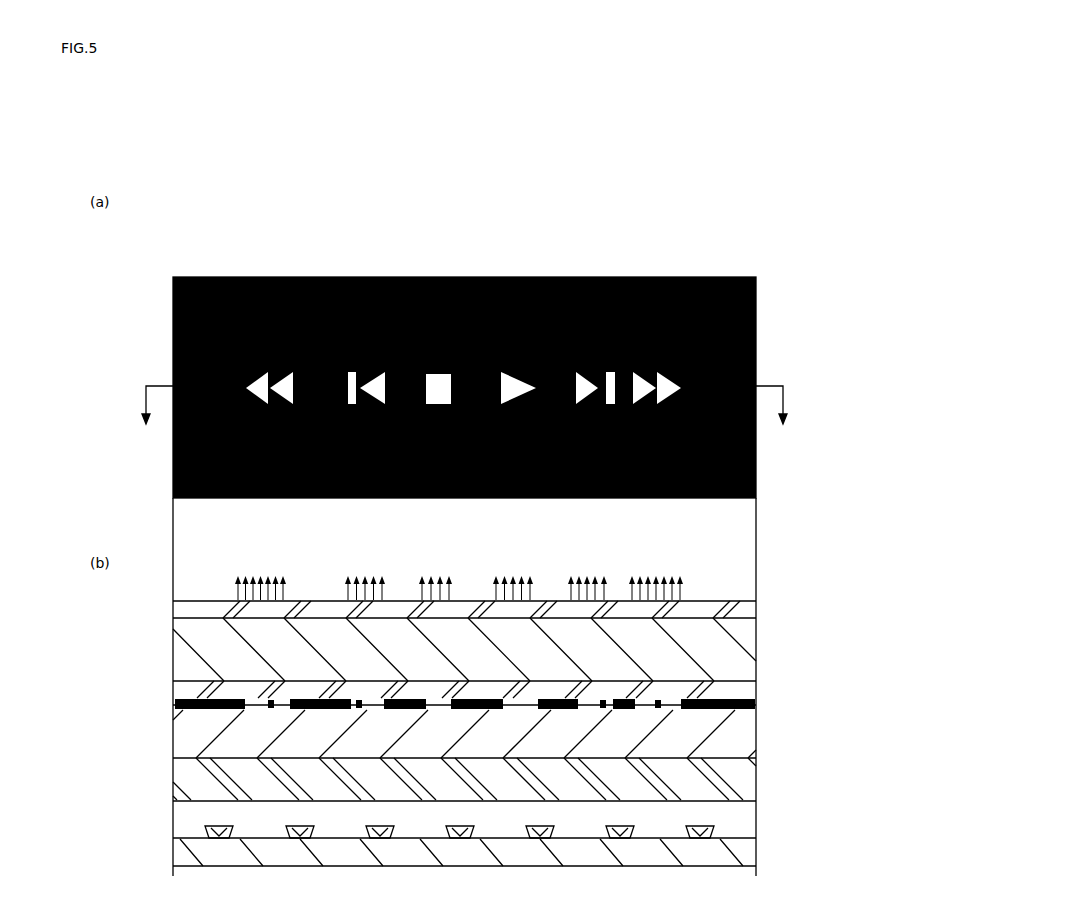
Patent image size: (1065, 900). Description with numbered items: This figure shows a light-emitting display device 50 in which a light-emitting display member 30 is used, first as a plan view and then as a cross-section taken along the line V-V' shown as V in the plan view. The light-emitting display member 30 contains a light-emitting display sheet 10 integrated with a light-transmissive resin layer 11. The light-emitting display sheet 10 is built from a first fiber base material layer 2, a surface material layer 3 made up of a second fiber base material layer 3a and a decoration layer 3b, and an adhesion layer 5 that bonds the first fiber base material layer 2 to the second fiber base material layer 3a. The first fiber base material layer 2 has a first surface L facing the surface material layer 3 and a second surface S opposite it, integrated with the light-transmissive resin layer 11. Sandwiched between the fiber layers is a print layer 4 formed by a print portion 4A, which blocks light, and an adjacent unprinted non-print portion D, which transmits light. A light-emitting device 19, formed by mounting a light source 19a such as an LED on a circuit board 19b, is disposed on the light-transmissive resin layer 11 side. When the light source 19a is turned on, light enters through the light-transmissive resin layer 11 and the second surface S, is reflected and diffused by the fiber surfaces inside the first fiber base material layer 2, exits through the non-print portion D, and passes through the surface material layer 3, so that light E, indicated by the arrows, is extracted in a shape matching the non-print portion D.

The light-emitting display device 50 is at (163, 239).
The decoration layer 3b is at (750, 271).
The second fiber base material layer 3a is at (748, 643).
The surface material layer 3 is at (788, 593).
The adhesion layer 5 is at (748, 678).
The light-emitting display sheet 10 is at (817, 760).
The light-emitting display member 30 is at (863, 798).
The print layer 4 is at (165, 696).
The print portion 4A is at (480, 492).
The first fiber base material layer 2 is at (788, 695).
The first surface L is at (733, 703).
The light-transmissive resin layer 11 is at (748, 783).
The second surface S is at (737, 753).
The light-emitting device 19 is at (105, 795).
The light source 19a is at (197, 822).
The circuit board 19b is at (168, 850).
The non-print portion D is at (287, 492).
The light E is at (459, 574).
The line V-V' V is at (465, 418).